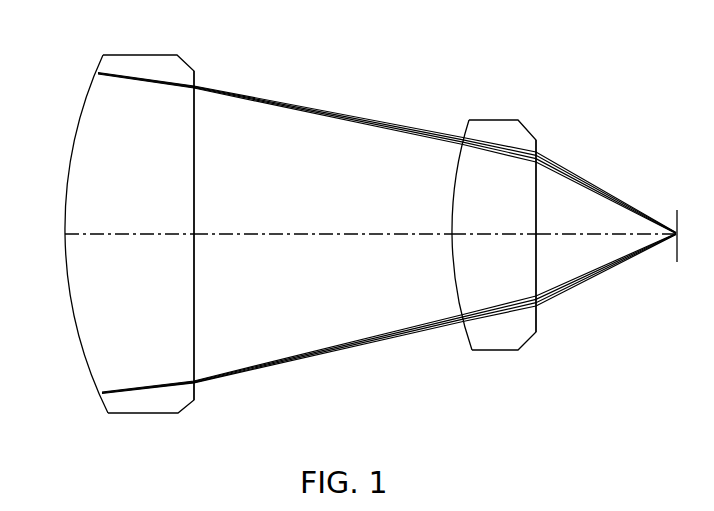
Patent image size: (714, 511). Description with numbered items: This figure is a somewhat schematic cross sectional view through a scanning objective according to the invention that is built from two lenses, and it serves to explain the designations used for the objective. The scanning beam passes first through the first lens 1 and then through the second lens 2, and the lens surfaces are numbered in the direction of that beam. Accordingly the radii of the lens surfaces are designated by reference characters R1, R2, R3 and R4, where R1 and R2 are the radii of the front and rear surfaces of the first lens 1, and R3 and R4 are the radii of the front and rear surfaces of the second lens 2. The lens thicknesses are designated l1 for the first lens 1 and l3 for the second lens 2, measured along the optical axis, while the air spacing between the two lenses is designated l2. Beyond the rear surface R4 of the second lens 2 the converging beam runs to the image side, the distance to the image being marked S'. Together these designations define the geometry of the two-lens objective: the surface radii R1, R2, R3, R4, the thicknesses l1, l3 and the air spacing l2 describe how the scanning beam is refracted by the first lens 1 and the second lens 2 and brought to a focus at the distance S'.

The first lens 1 is at (133, 218).
The second lens 2 is at (493, 218).
The radius of first lens surface R1 is at (71, 163).
The radius of second lens surface R2 is at (195, 147).
The radius of third lens surface R3 is at (453, 199).
The radius of fourth lens surface R4 is at (538, 203).
The lens thickness l1 is at (129, 249).
The air spacing l2 is at (323, 250).
The lens thickness l3 is at (494, 250).
The back focal distance to image plane S' is at (607, 238).